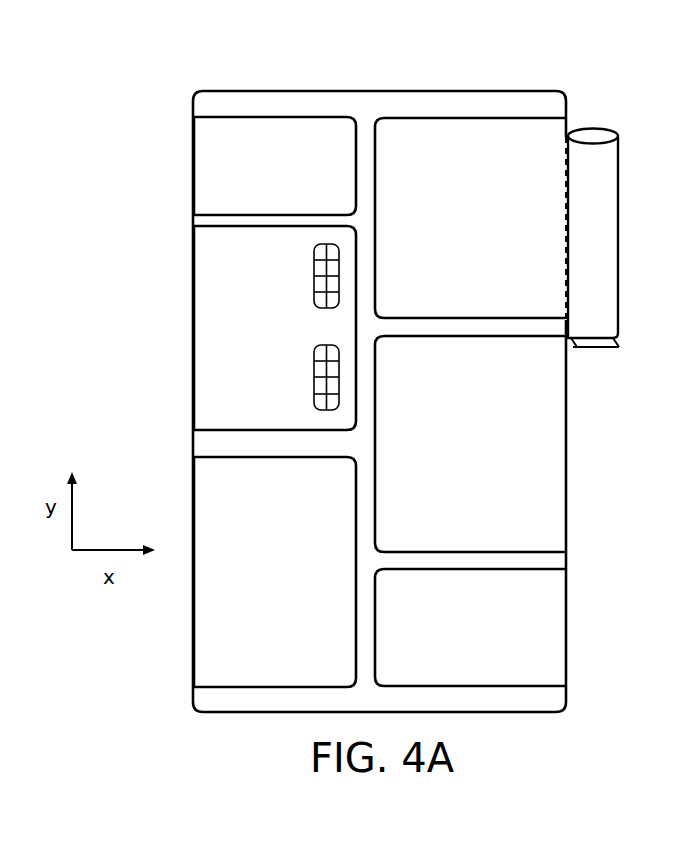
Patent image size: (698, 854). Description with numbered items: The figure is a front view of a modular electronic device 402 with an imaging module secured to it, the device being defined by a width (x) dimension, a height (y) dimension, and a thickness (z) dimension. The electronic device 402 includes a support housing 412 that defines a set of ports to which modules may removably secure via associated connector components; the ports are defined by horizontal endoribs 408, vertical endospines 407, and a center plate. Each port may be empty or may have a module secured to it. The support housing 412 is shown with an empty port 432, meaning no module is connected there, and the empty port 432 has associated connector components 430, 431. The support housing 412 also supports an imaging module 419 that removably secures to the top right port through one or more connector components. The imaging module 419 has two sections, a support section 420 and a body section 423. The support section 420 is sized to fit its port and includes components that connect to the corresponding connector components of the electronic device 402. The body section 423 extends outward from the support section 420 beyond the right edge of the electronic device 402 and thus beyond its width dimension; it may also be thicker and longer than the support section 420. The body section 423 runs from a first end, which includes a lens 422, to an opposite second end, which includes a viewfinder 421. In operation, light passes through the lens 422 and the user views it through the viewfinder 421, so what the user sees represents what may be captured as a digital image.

The modular electronic device 402 is at (355, 63).
The support housing 412 is at (380, 111).
The empty port 432 is at (202, 305).
The connector component 430 is at (314, 275).
The connector component 431 is at (314, 385).
The support section 420 is at (466, 148).
The imaging module 419 is at (465, 230).
The horizontal endoribs 408 is at (430, 328).
The vertical endospines 407 is at (366, 510).
The body section 423 is at (613, 200).
The lens 422 is at (590, 133).
The viewfinder 421 is at (594, 344).